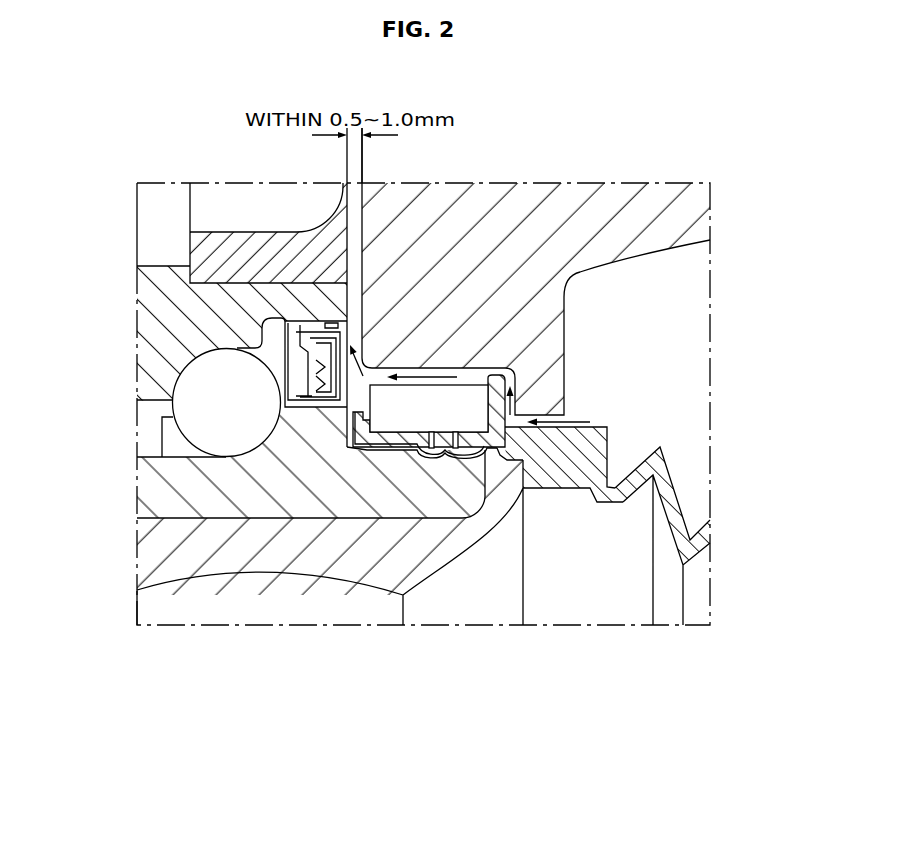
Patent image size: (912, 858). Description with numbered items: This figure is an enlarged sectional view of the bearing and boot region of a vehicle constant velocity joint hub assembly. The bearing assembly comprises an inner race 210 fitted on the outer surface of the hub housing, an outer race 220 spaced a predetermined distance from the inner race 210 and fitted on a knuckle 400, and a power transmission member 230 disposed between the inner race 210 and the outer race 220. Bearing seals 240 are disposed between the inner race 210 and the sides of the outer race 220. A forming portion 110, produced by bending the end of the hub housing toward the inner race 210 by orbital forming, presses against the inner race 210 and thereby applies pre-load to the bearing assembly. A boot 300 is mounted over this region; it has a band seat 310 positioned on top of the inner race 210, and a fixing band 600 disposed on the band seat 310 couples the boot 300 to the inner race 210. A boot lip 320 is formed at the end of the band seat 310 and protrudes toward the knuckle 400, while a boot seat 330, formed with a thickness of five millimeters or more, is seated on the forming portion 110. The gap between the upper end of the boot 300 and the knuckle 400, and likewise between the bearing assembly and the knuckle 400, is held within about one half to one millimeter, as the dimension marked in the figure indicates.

The forming portion 110 is at (505, 490).
The inner race 210 is at (180, 484).
The outer race 220 is at (167, 325).
The power transmission member 230 is at (190, 408).
The bearing seal 240 is at (307, 316).
The boot 300 is at (691, 493).
The band seat 310 is at (417, 442).
The boot lip 320 is at (497, 383).
The boot seat 330 is at (585, 448).
The knuckle 400 is at (558, 233).
The fixing band 600 is at (435, 406).